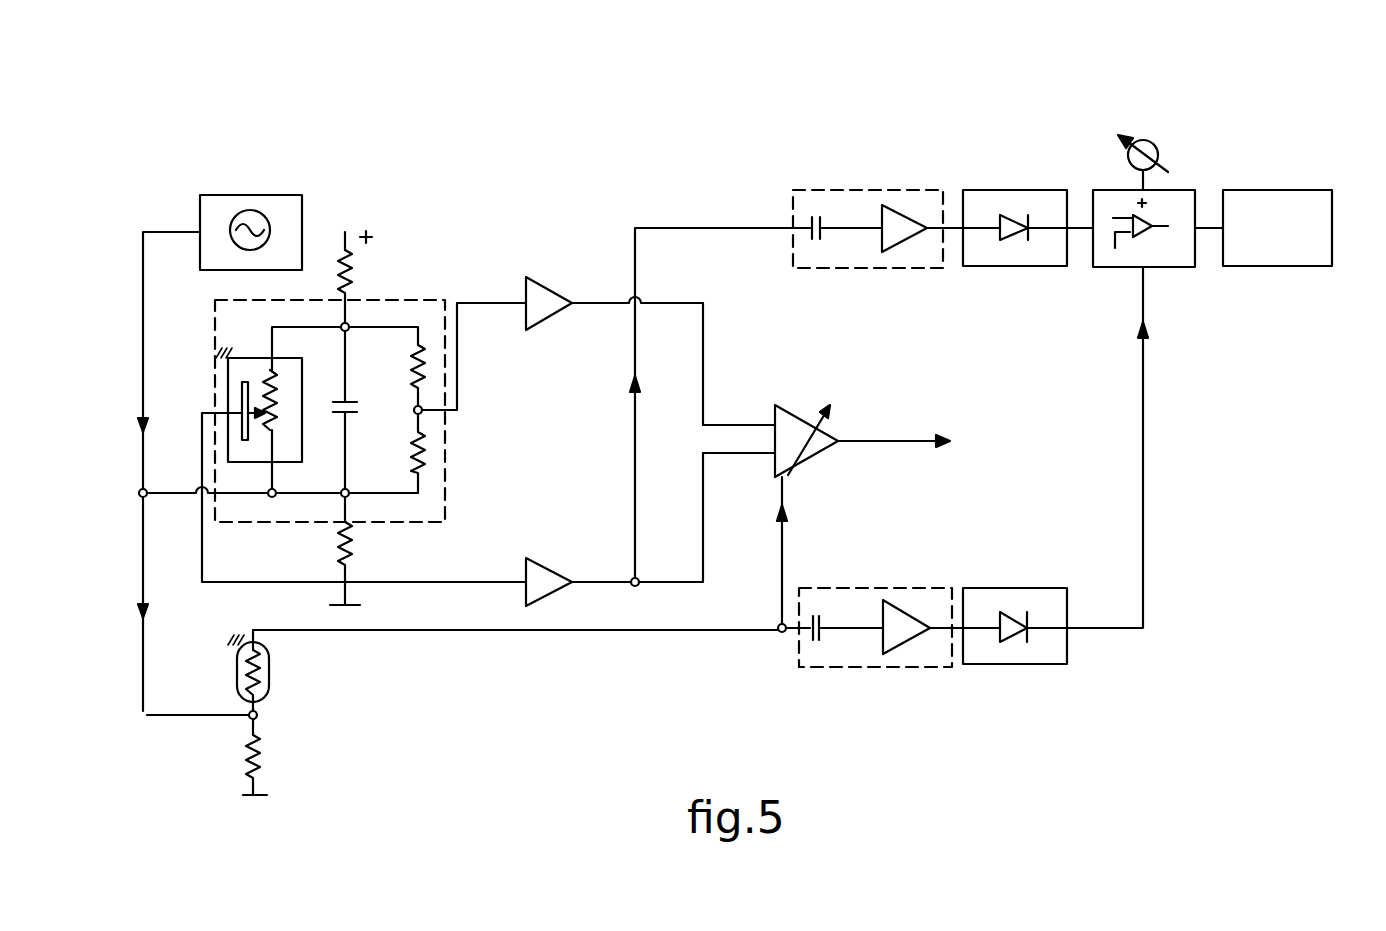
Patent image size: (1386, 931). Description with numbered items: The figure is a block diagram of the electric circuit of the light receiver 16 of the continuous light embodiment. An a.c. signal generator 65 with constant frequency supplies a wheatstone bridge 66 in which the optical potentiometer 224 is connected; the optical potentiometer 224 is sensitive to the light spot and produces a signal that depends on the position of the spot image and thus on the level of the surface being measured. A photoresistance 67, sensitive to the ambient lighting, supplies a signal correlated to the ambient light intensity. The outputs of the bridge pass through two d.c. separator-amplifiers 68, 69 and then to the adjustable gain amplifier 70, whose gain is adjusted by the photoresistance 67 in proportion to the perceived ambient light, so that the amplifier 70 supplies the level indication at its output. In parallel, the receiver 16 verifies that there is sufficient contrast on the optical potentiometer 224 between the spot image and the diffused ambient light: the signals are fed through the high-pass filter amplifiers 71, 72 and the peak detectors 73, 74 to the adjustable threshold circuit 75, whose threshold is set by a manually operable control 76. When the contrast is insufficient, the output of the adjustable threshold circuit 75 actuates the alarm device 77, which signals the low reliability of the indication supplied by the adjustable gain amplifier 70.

The light receiver 16 is at (633, 152).
The a.c. signal generator 65 is at (277, 203).
The optical potentiometer 224 is at (228, 390).
The wheatstone bridge 66 is at (443, 479).
The photoresistance 67 is at (265, 683).
The d.c. separator-amplifier 68 is at (548, 575).
The d.c. separator-amplifier 69 is at (547, 298).
The adjustable gain amplifier 70 is at (788, 422).
The high-pass filter amplifier 71 is at (907, 202).
The high-pass filter amplifier 72 is at (855, 598).
The peak detector 73 is at (1005, 203).
The peak detector 74 is at (1020, 597).
The adjustable threshold circuit 75 is at (1178, 253).
The manually operable control 76 is at (1155, 153).
The alarm device 77 is at (1278, 251).